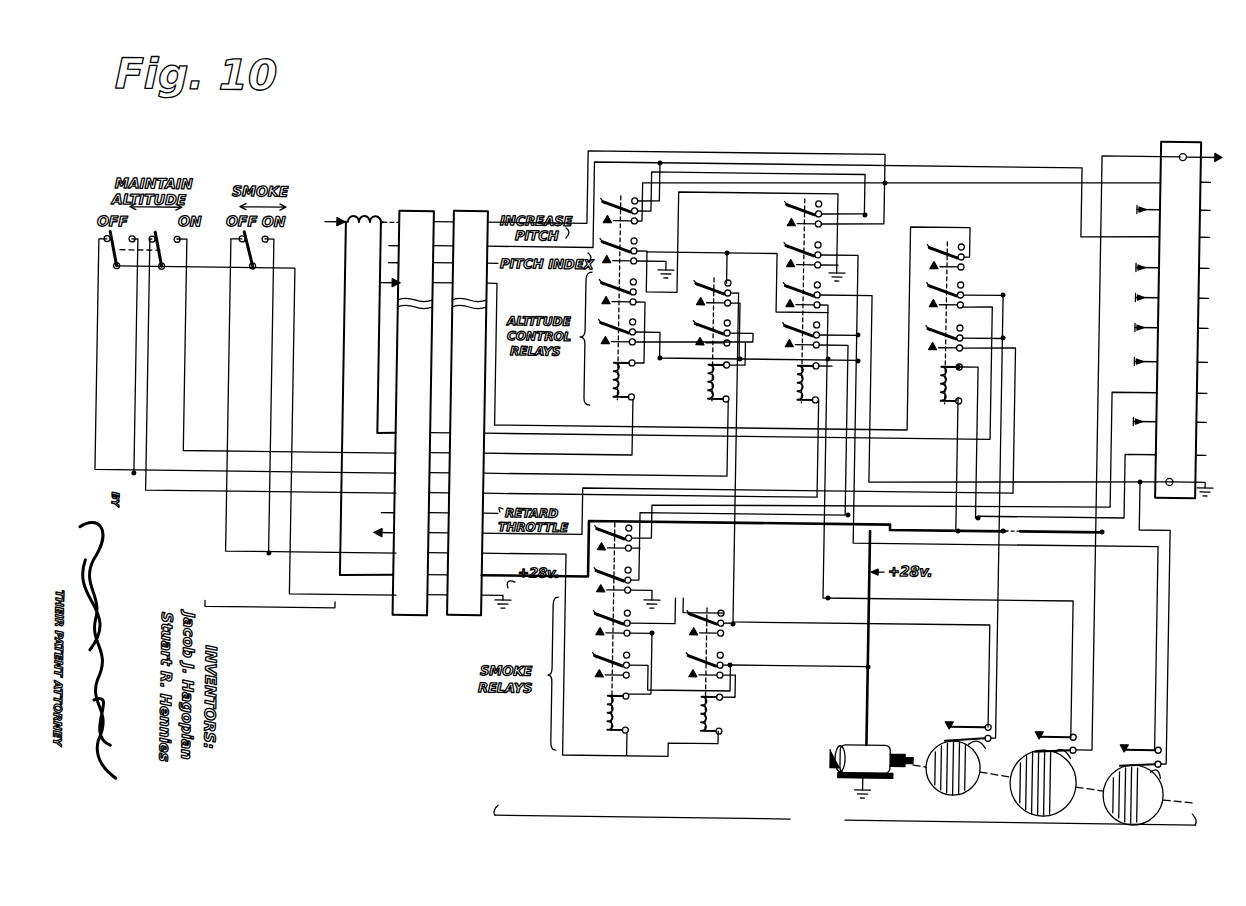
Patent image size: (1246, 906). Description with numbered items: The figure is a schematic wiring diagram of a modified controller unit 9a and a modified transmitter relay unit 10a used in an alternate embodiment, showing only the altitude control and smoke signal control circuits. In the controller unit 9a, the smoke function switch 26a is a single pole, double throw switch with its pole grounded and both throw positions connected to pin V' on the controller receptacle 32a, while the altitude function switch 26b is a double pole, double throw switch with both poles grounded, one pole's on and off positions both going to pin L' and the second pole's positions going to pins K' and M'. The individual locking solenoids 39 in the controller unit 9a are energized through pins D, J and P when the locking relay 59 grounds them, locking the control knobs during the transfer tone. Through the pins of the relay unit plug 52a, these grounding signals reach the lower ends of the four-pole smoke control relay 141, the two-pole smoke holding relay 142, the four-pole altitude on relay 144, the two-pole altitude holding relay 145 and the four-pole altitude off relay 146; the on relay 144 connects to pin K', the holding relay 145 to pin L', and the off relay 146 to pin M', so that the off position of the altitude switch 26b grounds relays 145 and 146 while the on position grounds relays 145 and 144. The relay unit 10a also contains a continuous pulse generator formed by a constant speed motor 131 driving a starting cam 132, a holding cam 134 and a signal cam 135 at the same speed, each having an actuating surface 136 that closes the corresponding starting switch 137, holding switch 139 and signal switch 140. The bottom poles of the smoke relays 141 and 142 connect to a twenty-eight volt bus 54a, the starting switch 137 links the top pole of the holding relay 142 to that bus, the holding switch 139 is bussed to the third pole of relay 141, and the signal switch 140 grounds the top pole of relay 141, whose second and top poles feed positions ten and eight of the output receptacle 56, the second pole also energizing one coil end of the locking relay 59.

The altitude function switch 26b is at (165, 266).
The smoke function switch 26a is at (256, 266).
The locking solenoids 39 is at (376, 215).
The modified controller unit 9a is at (269, 617).
The controller receptacle 32a is at (407, 619).
The relay unit plug 52a is at (487, 619).
The altitude "on" relay 144 is at (602, 228).
The altitude holding relay 145 is at (707, 316).
The altitude "off" relay 146 is at (792, 236).
The locking relay 59 is at (962, 276).
The smoke control relay 141 is at (613, 680).
The smoke holding relay 142 is at (712, 650).
The output receptacle 56 is at (1179, 147).
The +28 volt bus 54a is at (870, 619).
The constant speed motor 131 is at (882, 748).
The starting cam 132 is at (934, 786).
The holding cam 134 is at (1026, 768).
The signal cam 135 is at (1116, 778).
The actuating surface 136 is at (1002, 768).
The starting switch 137 is at (962, 730).
The holding switch 139 is at (1050, 742).
The signal switch 140 is at (1136, 752).
The modified transmitter relay unit 10a is at (845, 820).